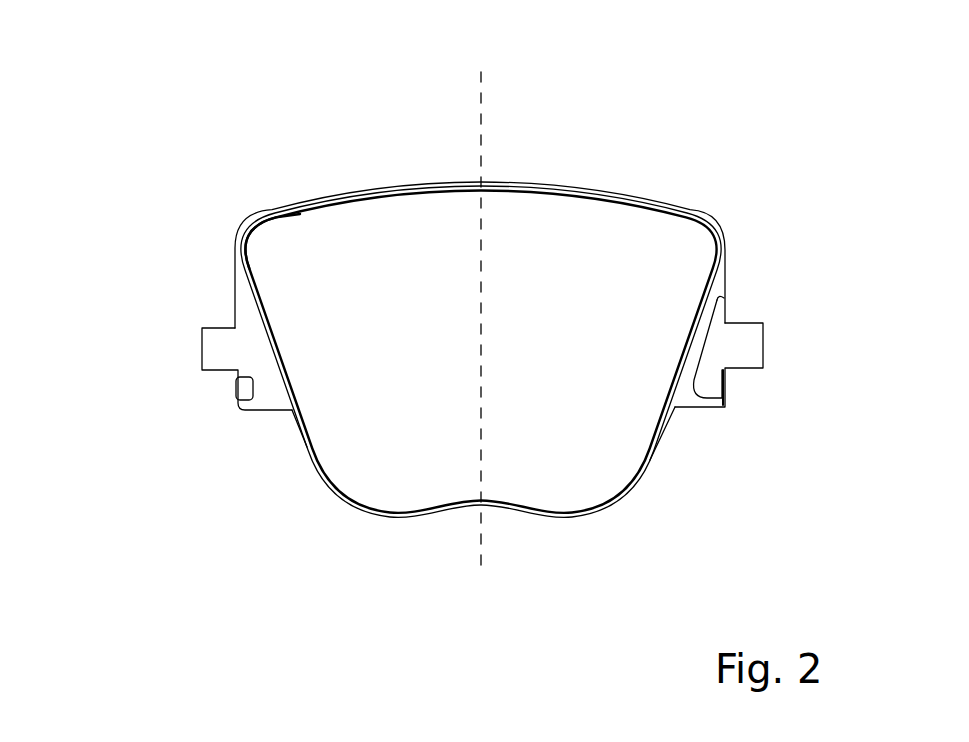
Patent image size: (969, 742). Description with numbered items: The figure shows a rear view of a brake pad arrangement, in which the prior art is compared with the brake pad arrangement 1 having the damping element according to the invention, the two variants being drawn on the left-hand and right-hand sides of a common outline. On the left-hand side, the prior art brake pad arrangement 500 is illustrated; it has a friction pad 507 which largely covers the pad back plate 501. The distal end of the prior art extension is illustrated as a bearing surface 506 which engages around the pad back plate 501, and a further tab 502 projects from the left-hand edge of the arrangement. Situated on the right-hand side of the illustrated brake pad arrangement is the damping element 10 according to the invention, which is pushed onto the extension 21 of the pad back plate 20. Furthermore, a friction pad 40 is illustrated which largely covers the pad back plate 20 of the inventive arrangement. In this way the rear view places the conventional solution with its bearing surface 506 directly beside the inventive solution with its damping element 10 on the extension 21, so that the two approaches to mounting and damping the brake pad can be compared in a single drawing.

The brake pad arrangement 1 is at (722, 187).
The damping element 10 is at (730, 403).
The pad back plate 20 is at (621, 195).
The extension 21 is at (748, 332).
The friction pad 40 is at (592, 408).
The brake pad arrangement 500 is at (207, 252).
The pad back plate 501 is at (295, 208).
The shim tab 502 is at (210, 345).
The bearing surface 506 is at (247, 395).
The friction pad 507 is at (370, 401).